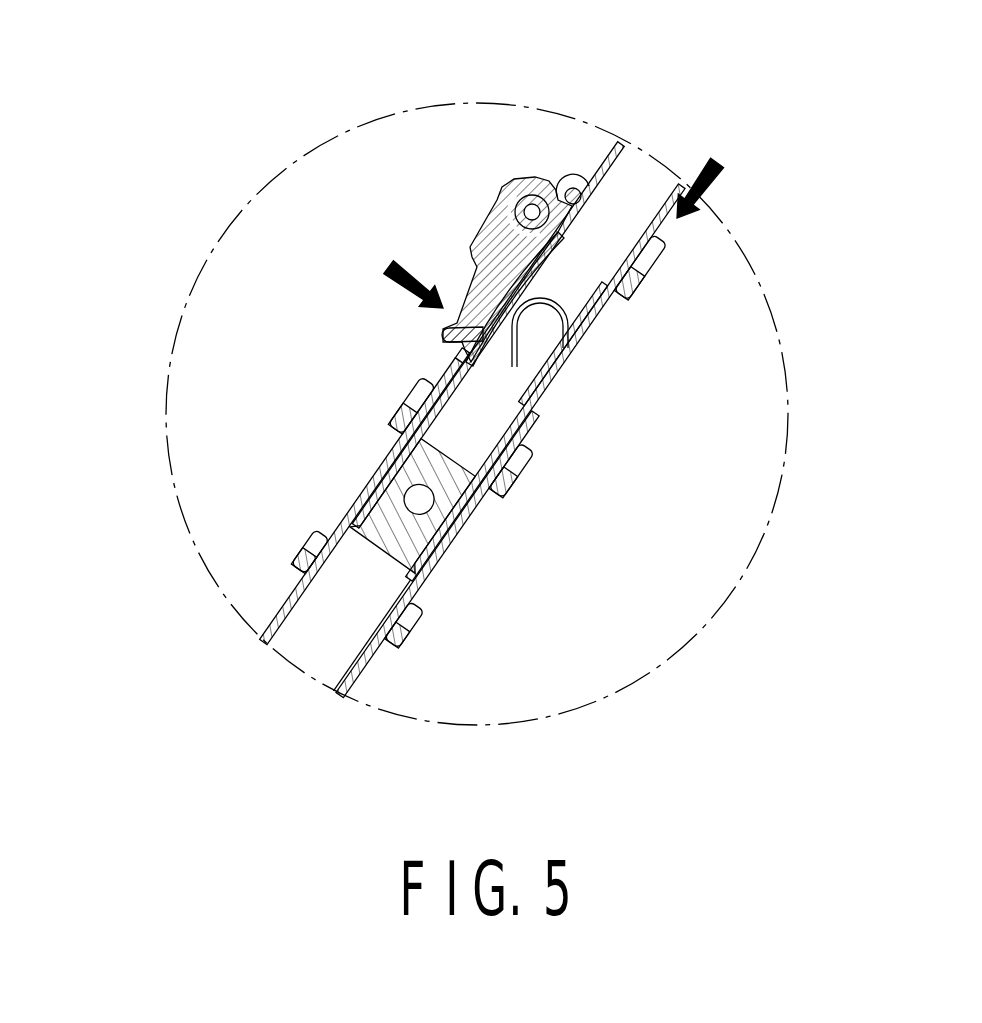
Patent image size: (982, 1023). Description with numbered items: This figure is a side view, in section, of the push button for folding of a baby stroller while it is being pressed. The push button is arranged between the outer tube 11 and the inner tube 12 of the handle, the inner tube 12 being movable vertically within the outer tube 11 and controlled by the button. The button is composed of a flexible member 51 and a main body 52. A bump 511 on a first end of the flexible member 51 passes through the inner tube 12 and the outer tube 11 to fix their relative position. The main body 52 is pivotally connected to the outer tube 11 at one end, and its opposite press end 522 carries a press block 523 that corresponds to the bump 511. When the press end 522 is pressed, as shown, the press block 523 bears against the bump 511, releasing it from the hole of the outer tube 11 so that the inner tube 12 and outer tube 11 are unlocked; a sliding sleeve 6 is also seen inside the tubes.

The outer tube 11 is at (363, 664).
The inner tube 12 is at (606, 158).
The flexible member 51 is at (558, 315).
The bump 511 is at (453, 363).
The main body 52 is at (485, 180).
The press end 522 is at (460, 310).
The press block 523 is at (443, 328).
The sliding sleeve 6 is at (433, 573).